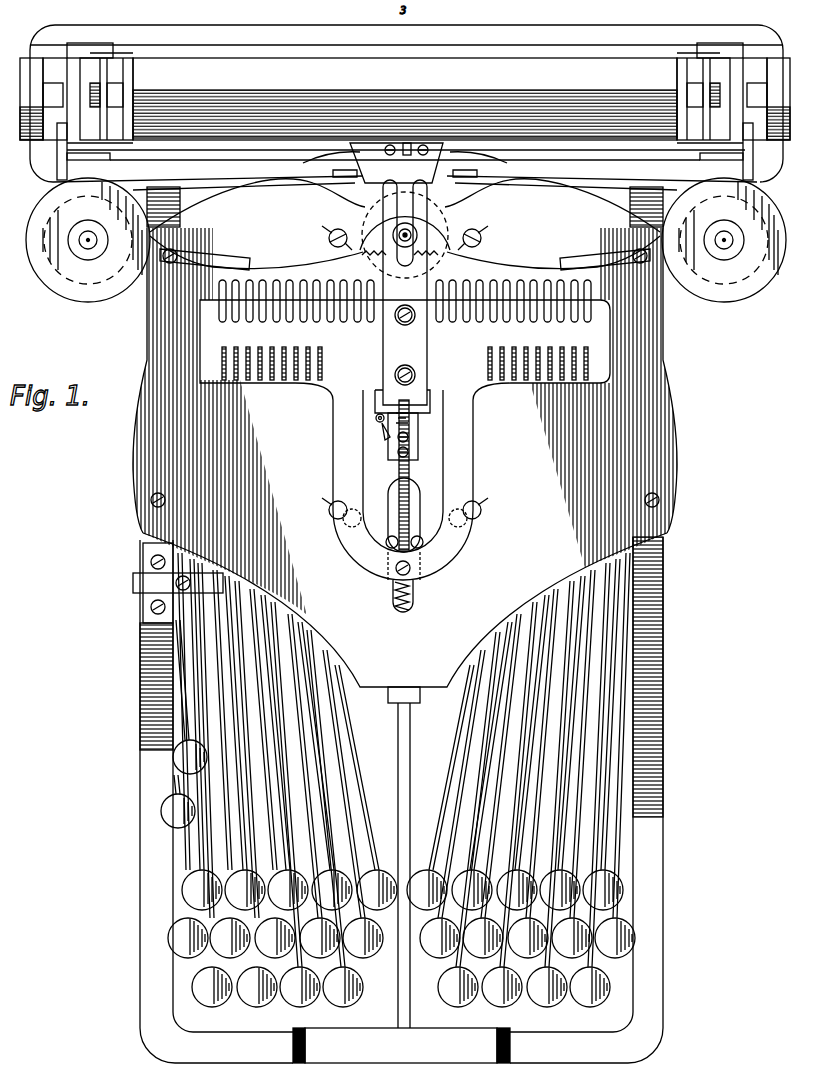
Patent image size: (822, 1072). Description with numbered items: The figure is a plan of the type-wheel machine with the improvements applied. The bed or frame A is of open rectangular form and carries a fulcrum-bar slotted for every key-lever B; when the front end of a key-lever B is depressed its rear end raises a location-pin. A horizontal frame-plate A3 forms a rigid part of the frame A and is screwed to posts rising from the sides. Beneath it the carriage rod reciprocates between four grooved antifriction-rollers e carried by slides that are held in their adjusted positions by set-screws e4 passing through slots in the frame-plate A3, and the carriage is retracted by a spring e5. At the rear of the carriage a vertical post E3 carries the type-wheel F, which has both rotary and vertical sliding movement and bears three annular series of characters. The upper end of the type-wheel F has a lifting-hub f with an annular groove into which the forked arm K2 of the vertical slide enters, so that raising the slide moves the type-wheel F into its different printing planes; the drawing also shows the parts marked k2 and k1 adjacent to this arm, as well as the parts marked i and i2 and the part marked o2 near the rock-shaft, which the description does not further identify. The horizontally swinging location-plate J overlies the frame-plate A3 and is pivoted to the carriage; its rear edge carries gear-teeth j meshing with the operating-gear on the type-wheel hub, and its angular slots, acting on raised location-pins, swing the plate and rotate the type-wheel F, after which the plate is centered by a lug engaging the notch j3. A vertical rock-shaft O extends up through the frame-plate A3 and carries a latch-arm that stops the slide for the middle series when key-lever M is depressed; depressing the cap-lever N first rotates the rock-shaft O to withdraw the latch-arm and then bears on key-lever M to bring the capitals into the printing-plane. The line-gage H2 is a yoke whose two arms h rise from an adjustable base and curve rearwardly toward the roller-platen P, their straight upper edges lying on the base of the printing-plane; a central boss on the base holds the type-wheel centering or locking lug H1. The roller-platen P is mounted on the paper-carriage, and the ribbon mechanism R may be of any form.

The roller-platen P is at (406, 109).
The ribbon mechanism R is at (406, 240).
The arms of line-gage h is at (397, 161).
The line-gage H2 is at (405, 163).
The type-wheel centering or locking lug H1 is at (406, 163).
The lifting-hub f is at (402, 232).
The vertical post E3 is at (398, 238).
The type-wheel F is at (440, 222).
The gear-teeth j is at (350, 255).
The set-screws e4 is at (414, 378).
The notch j3 is at (405, 254).
The screw k2 is at (405, 306).
The forked arm K2 is at (400, 325).
The screw k1 is at (400, 348).
The bracket i is at (430, 398).
The bracket plate i2 is at (418, 432).
The vertical rock-shaft O is at (376, 420).
The pawl o2 is at (387, 437).
The location-plate J is at (466, 452).
The frame-plate A3 is at (405, 618).
The grooved antifriction-rollers e is at (420, 545).
The spring e5 is at (416, 600).
The bed or frame A is at (150, 727).
The key-lever B is at (588, 760).
The cap-lever N is at (188, 757).
The key-lever M is at (176, 811).